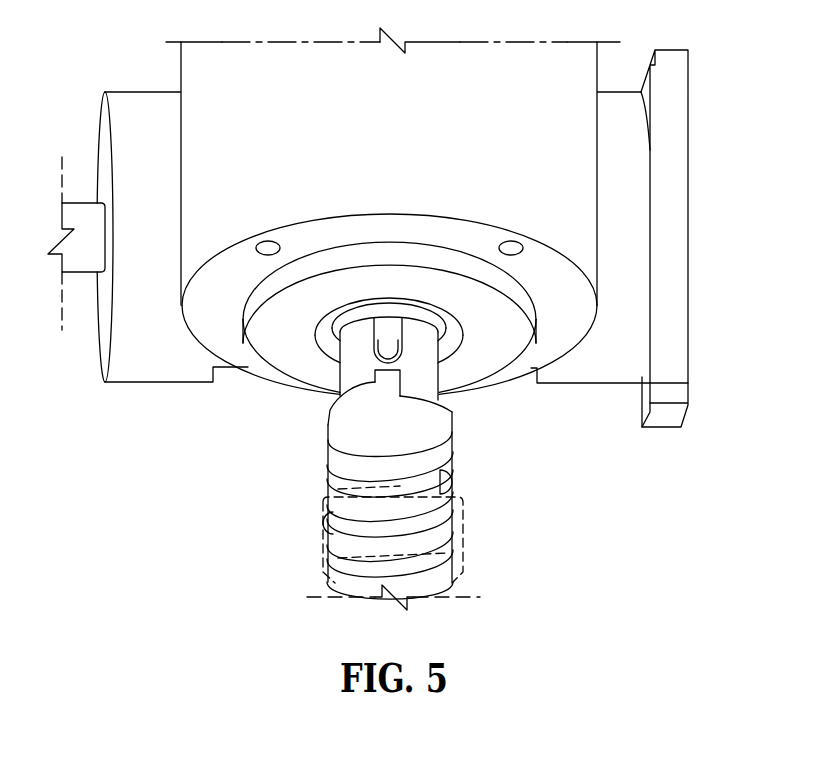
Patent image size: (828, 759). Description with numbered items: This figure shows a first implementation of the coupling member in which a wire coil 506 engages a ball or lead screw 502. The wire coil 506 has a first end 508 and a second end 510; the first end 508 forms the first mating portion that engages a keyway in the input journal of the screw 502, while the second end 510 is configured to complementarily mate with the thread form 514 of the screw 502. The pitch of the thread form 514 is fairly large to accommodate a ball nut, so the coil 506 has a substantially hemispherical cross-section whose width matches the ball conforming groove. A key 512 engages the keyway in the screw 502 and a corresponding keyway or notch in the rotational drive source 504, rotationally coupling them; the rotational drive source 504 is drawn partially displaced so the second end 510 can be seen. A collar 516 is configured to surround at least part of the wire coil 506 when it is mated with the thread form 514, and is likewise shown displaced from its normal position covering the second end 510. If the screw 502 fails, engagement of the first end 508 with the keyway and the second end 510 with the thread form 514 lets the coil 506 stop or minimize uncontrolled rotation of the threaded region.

The screw 502 is at (397, 349).
The rotational drive source 504 is at (243, 370).
The wire coil 506 is at (377, 484).
The first end 508 is at (388, 383).
The second end 510 is at (452, 440).
The key 512 is at (390, 330).
The thread form 514 is at (332, 490).
The collar 516 is at (463, 532).